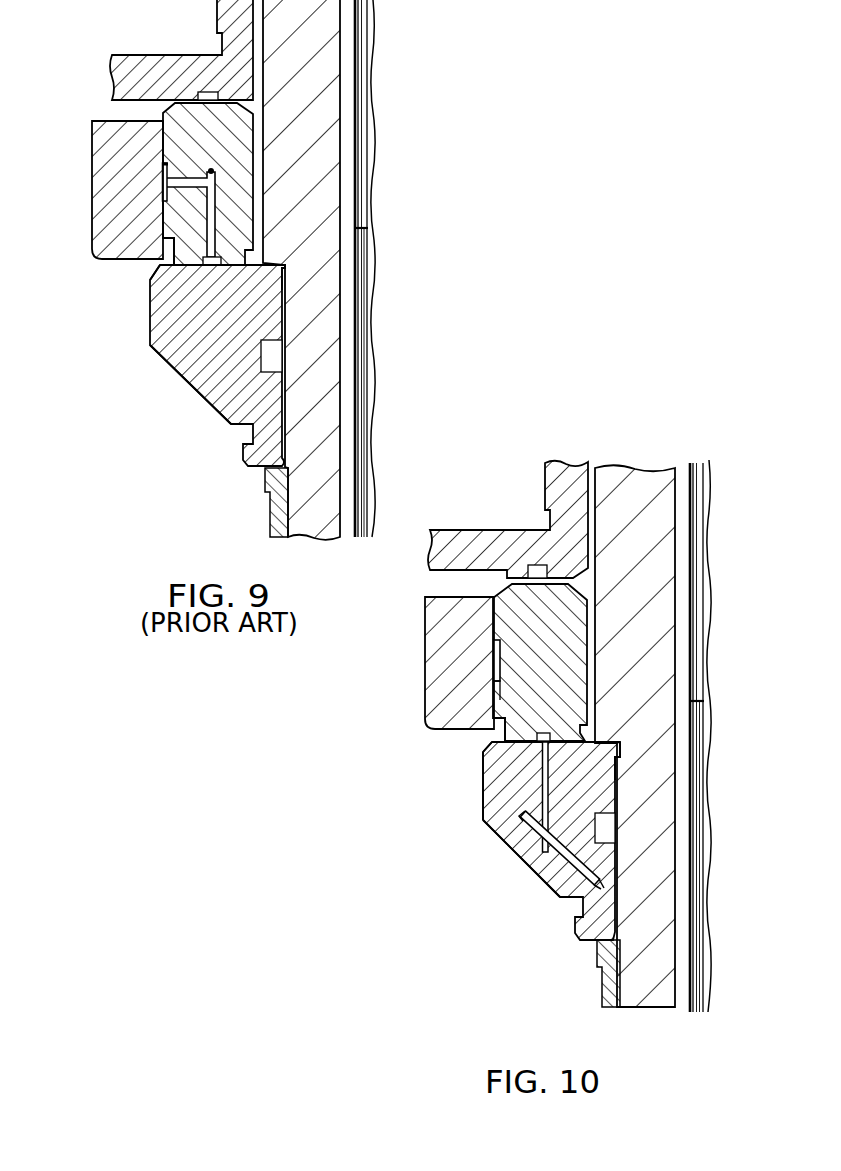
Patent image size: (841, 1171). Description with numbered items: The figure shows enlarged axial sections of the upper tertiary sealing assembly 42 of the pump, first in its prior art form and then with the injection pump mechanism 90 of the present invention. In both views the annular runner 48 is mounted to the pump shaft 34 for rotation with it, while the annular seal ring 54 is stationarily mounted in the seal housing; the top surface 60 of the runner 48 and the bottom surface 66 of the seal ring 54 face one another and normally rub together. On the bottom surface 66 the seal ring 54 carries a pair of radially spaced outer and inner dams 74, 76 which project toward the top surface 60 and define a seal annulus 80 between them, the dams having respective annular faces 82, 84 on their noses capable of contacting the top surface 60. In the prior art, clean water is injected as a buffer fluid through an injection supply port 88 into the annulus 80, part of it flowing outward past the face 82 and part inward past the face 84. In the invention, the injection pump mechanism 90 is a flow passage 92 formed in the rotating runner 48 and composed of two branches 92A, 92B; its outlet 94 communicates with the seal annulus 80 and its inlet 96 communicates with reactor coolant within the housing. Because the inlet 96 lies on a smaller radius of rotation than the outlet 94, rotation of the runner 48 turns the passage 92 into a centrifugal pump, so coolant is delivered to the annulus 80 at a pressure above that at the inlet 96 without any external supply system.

In FIG. 9, the pump shaft 34 is at (373, 35).
In FIG. 10, the pump shaft 34 is at (709, 510).
In FIG. 9, the upper tertiary sealing assembly 42 is at (166, 394).
In FIG. 10, the upper tertiary sealing assembly 42 is at (452, 822).
In FIG. 9, the annular runner 48 is at (268, 393).
In FIG. 10, the annular runner 48 is at (598, 773).
In FIG. 9, the annular seal ring 54 is at (232, 143).
In FIG. 10, the annular seal ring 54 is at (567, 665).
In FIG. 9, the top surface of runner 60 is at (163, 257).
In FIG. 10, the top surface of runner 60 is at (497, 684).
In FIG. 9, the bottom surface of seal ring 66 is at (216, 260).
In FIG. 10, the bottom surface of seal ring 66 is at (560, 730).
In FIG. 9, the outer dam 74 is at (192, 253).
In FIG. 10, the outer dam 74 is at (527, 737).
In FIG. 9, the inner dam 76 is at (166, 203).
In FIG. 10, the inner dam 76 is at (528, 733).
In FIG. 9, the seal annulus 80 is at (250, 300).
In FIG. 10, the seal annulus 80 is at (610, 785).
In FIG. 9, the annular face of outer dam 82 is at (157, 300).
In FIG. 10, the annular face of outer dam 82 is at (512, 782).
In FIG. 9, the annular face of inner dam 84 is at (215, 270).
In FIG. 10, the annular face of inner dam 84 is at (600, 762).
In FIG. 9, the injection supply port 88 is at (163, 171).
In FIG. 10, the injection supply port 88 is at (459, 663).
In FIG. 10, the injection pump mechanism 90 is at (493, 851).
In FIG. 10, the flow passage 92 is at (542, 865).
In FIG. 10, the first branch of flow passage 92A is at (530, 791).
In FIG. 10, the second branch of flow passage 92B is at (580, 870).
In FIG. 10, the passage outlet 94 is at (537, 783).
In FIG. 10, the passage inlet 96 is at (596, 892).